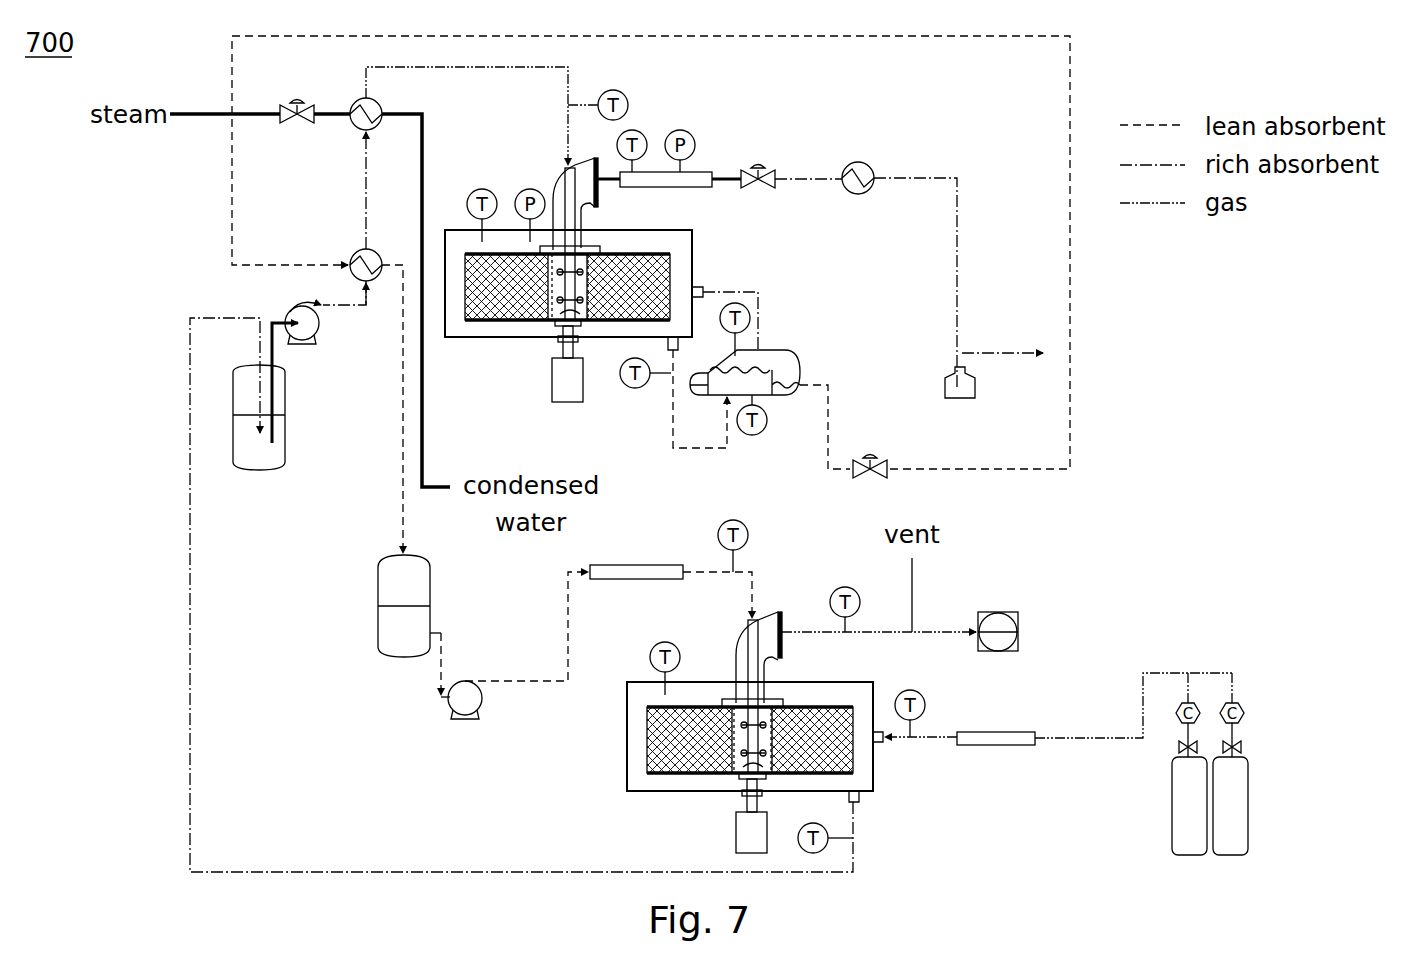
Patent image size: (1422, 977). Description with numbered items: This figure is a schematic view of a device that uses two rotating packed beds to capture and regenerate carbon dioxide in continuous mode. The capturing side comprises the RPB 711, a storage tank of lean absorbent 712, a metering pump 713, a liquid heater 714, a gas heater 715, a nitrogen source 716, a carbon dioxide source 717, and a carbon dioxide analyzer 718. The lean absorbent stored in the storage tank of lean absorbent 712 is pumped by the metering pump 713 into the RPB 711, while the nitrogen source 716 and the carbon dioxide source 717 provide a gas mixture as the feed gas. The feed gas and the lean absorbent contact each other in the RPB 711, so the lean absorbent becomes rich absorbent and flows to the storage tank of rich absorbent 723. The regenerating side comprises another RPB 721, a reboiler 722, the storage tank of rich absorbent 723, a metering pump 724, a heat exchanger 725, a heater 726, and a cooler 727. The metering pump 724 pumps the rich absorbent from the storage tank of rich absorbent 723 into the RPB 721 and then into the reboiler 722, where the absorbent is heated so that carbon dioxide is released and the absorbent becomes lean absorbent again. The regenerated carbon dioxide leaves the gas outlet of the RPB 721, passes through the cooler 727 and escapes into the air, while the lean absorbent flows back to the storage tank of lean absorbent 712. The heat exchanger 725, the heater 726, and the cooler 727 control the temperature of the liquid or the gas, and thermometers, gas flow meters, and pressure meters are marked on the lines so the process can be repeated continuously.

The RPB 711 is at (870, 793).
The storage tank of lean absorbent 712 is at (405, 657).
The metering pump 713 is at (472, 719).
The liquid heater 714 is at (658, 565).
The gas heater 715 is at (997, 746).
The N2 source 716 is at (1187, 856).
The CO2 source 717 is at (1230, 856).
The CO2 analyzer 718 is at (1020, 622).
The RPB 721 is at (698, 252).
The reboiler 722 is at (806, 358).
The storage tank of rich absorbent 723 is at (258, 470).
The metering pump 724 is at (305, 345).
The heat exchanger 725 is at (353, 253).
The heater 726 is at (353, 102).
The cooler 727 is at (848, 165).